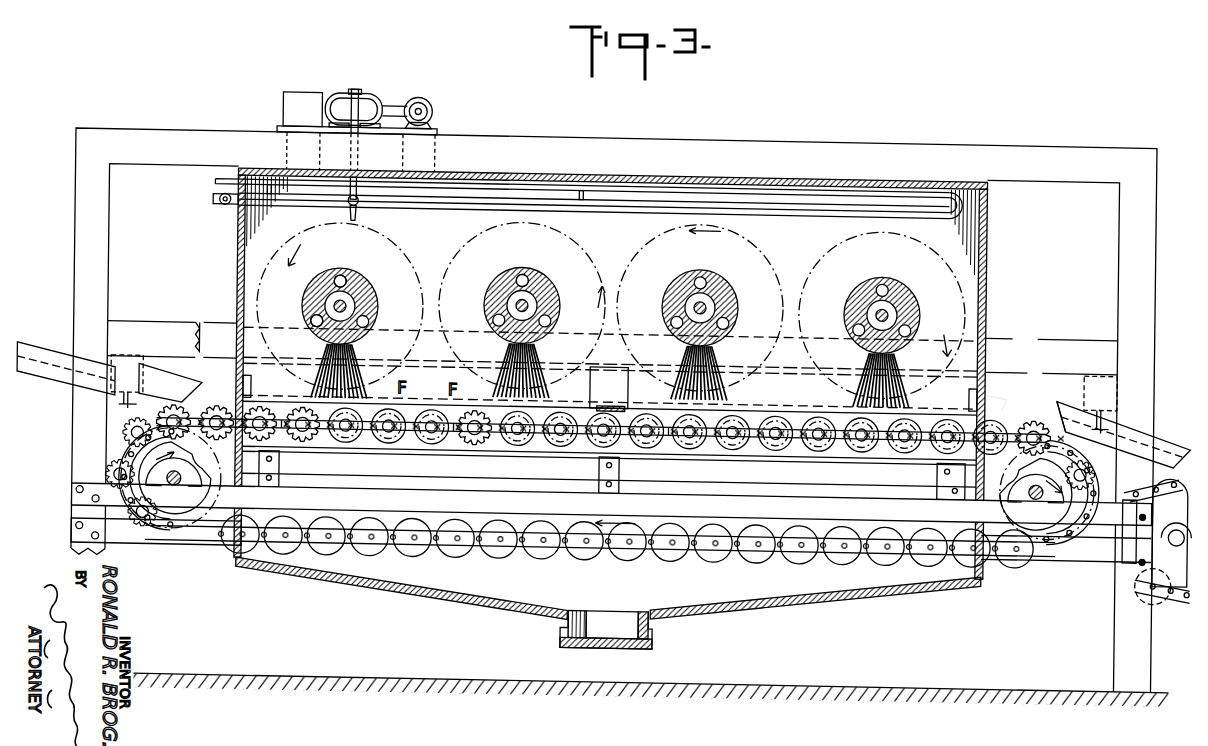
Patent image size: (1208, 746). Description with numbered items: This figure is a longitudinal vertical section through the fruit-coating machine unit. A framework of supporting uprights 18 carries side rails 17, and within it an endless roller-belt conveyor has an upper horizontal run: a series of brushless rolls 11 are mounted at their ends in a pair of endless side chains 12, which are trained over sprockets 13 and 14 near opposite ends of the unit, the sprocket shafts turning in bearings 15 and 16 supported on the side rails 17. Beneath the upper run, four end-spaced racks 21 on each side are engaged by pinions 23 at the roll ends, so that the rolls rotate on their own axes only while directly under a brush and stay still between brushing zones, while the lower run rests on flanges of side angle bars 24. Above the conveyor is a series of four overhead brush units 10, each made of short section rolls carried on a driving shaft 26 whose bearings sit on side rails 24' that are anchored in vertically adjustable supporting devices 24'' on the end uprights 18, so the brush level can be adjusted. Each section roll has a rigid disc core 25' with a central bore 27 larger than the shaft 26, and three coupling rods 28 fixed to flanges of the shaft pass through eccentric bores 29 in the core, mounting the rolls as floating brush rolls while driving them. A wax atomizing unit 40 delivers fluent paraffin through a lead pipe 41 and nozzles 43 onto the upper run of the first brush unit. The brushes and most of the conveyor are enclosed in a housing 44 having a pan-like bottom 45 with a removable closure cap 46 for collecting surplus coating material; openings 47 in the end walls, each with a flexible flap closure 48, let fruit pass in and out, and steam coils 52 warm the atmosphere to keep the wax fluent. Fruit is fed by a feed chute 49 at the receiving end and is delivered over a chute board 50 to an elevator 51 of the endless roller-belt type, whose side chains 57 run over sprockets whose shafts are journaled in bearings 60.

The rotary brush unit 10 is at (612, 246).
The rolls 11 is at (434, 436).
The endless side chains 12 is at (795, 399).
The sprockets 13 is at (208, 463).
The sprockets 14 is at (1038, 464).
The bearings 15 is at (197, 480).
The bearings 16 is at (1047, 481).
The side rails 17 is at (368, 496).
The supporting uprights 18 is at (80, 236).
The racks 21 is at (306, 436).
The pinions 23 is at (481, 437).
The side angle bars 24 is at (600, 528).
The side rails 24' is at (576, 361).
The vertically adjustable supporting devices 24'' is at (1142, 398).
The disc core 25' is at (513, 310).
The driving shaft 26 is at (375, 298).
The central bore 27 is at (333, 348).
The coupling rods 28 is at (343, 270).
The eccentric bores 29 is at (314, 316).
The wax atomizing unit 40 is at (367, 90).
The lead pipe 41 is at (353, 189).
The nozzles 43 is at (364, 206).
The housing 44 is at (240, 226).
The pan-like bottom 45 is at (444, 594).
The removable closure cap 46 is at (615, 636).
The openings 47 is at (247, 379).
The flexible flap closure 48 is at (255, 380).
The feed chute 49 is at (44, 359).
The chute board 50 is at (1087, 407).
The elevator 51 is at (1191, 591).
The steam coils 52 is at (812, 202).
The endless side chains 57 is at (1194, 425).
The bearings 60 is at (1157, 532).